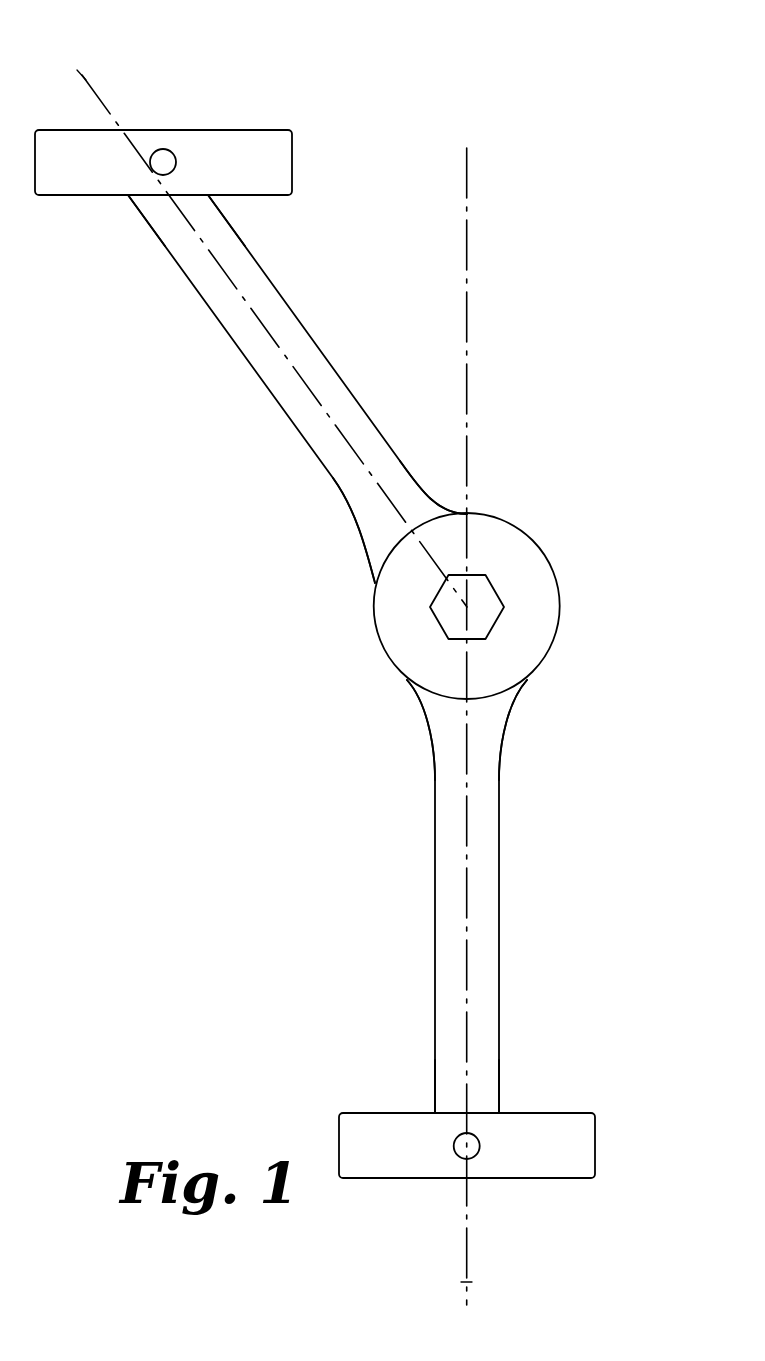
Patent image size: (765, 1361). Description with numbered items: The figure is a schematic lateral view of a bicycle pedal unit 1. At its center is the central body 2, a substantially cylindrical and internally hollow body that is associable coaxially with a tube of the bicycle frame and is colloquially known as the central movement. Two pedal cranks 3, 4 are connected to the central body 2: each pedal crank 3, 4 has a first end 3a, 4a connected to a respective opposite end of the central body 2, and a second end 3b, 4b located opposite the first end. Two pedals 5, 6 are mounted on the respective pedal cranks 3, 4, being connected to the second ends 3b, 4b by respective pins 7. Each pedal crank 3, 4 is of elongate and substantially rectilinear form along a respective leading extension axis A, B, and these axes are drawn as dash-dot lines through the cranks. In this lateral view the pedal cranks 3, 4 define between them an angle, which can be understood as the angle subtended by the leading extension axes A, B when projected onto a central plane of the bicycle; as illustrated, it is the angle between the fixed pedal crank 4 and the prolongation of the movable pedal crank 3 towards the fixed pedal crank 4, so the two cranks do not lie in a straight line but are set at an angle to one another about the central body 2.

The bicycle pedal unit 1 is at (528, 162).
The central body 2 is at (528, 565).
The pedal crank 3 is at (275, 389).
The first end 3a is at (422, 502).
The second end 3b is at (165, 216).
The pedal crank 4 is at (500, 896).
The first end 4a is at (488, 715).
The second end 4b is at (488, 1078).
The pedal 5 is at (278, 150).
The pedal 6 is at (580, 1145).
The pin 7 is at (163, 163).
The leading extension axis A is at (82, 74).
The leading extension axis B is at (466, 1282).